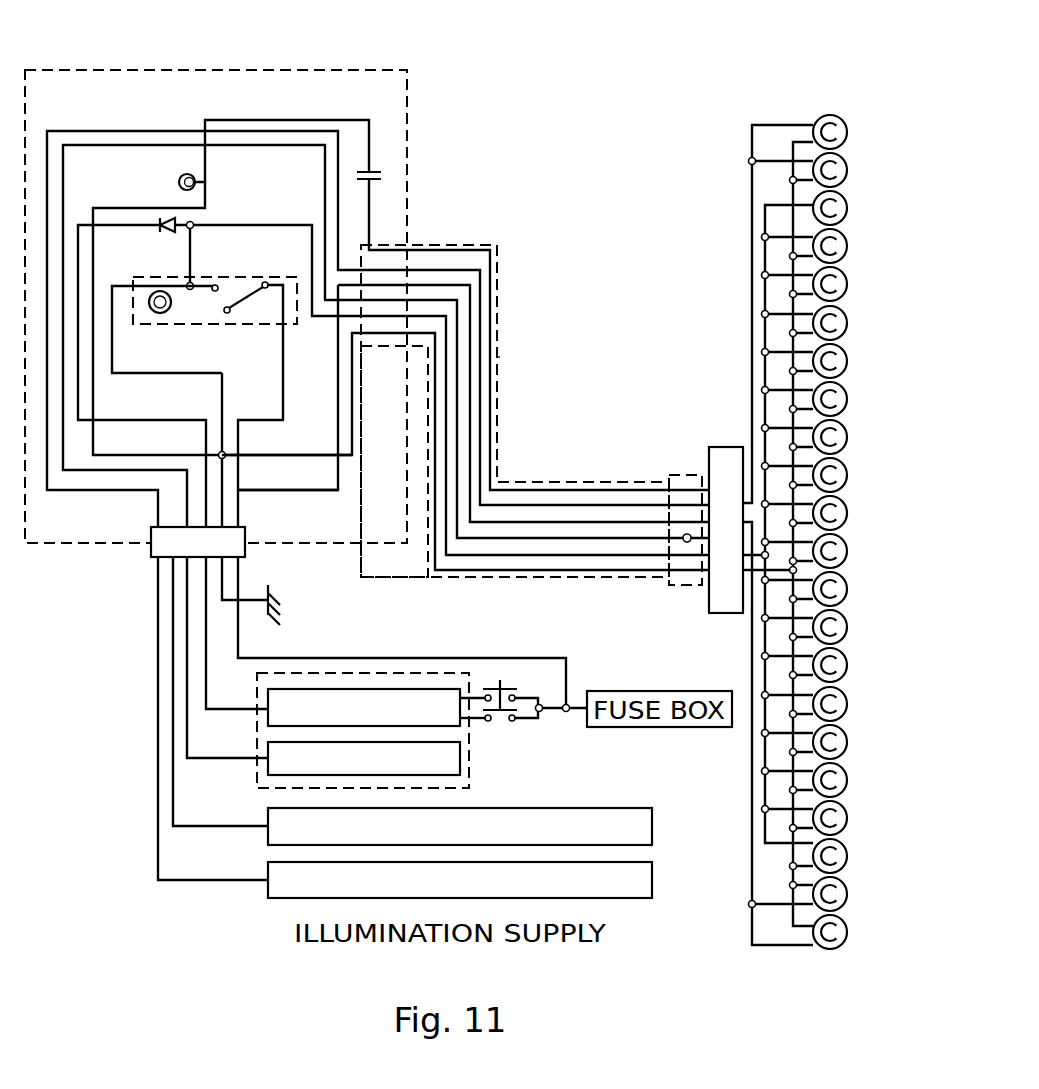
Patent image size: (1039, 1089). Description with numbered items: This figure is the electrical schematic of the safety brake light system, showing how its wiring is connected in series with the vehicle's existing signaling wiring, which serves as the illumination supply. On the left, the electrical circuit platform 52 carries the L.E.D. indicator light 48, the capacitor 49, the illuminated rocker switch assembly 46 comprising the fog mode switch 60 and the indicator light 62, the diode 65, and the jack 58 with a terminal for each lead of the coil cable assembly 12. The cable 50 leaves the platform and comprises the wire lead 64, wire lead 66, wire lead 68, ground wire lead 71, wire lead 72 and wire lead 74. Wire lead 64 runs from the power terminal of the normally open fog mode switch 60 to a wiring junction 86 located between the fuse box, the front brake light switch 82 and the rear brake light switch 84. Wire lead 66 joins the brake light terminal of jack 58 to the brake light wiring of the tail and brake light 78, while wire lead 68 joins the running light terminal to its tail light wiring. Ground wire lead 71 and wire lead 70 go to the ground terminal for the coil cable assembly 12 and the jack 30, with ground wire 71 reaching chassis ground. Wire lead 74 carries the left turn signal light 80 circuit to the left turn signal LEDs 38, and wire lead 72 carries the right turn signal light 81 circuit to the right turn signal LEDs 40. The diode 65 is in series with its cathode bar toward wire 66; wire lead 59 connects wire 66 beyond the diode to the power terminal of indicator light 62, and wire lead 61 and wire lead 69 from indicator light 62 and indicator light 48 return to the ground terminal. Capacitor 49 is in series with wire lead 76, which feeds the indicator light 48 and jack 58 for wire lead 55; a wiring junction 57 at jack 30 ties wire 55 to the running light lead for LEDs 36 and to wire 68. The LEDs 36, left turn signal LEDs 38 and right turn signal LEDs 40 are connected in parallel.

The coil cable assembly 12 is at (510, 362).
The jack 30 is at (690, 472).
The LEDs 36 is at (849, 513).
The left turn signal LEDs 38 is at (842, 886).
The right turn signal LEDs 40 is at (842, 123).
The illuminated rocker switch assembly 46 is at (140, 275).
The L.E.D. indicator light 48 is at (185, 173).
The capacitor 49 is at (374, 171).
The cable 50 is at (155, 551).
The electrical circuit platform 52 is at (117, 68).
The wire lead 55 is at (452, 250).
The wiring junction 57 is at (685, 541).
The jack 58 is at (382, 348).
The wire lead 59 is at (195, 250).
The fog mode switch 60 is at (265, 282).
The wire lead 61 is at (187, 372).
The indicator light 62 is at (158, 314).
The wire lead 64 is at (283, 358).
The diode 65 is at (167, 233).
The wire lead 66 is at (230, 223).
The wire lead 68 is at (65, 177).
The wire lead 69 is at (148, 207).
The wire lead 70 is at (310, 453).
The ground wire lead 71 is at (224, 473).
The wire lead 72 is at (105, 130).
The wire lead 74 is at (310, 493).
The wire lead 76 is at (285, 118).
The tail and brake light 78 is at (483, 762).
The left turn signal light 80 is at (652, 826).
The right turn signal light 81 is at (652, 880).
The front brake light switch 82 is at (503, 683).
The rear brake light switch 84 is at (510, 722).
The wiring junction 86 is at (567, 712).